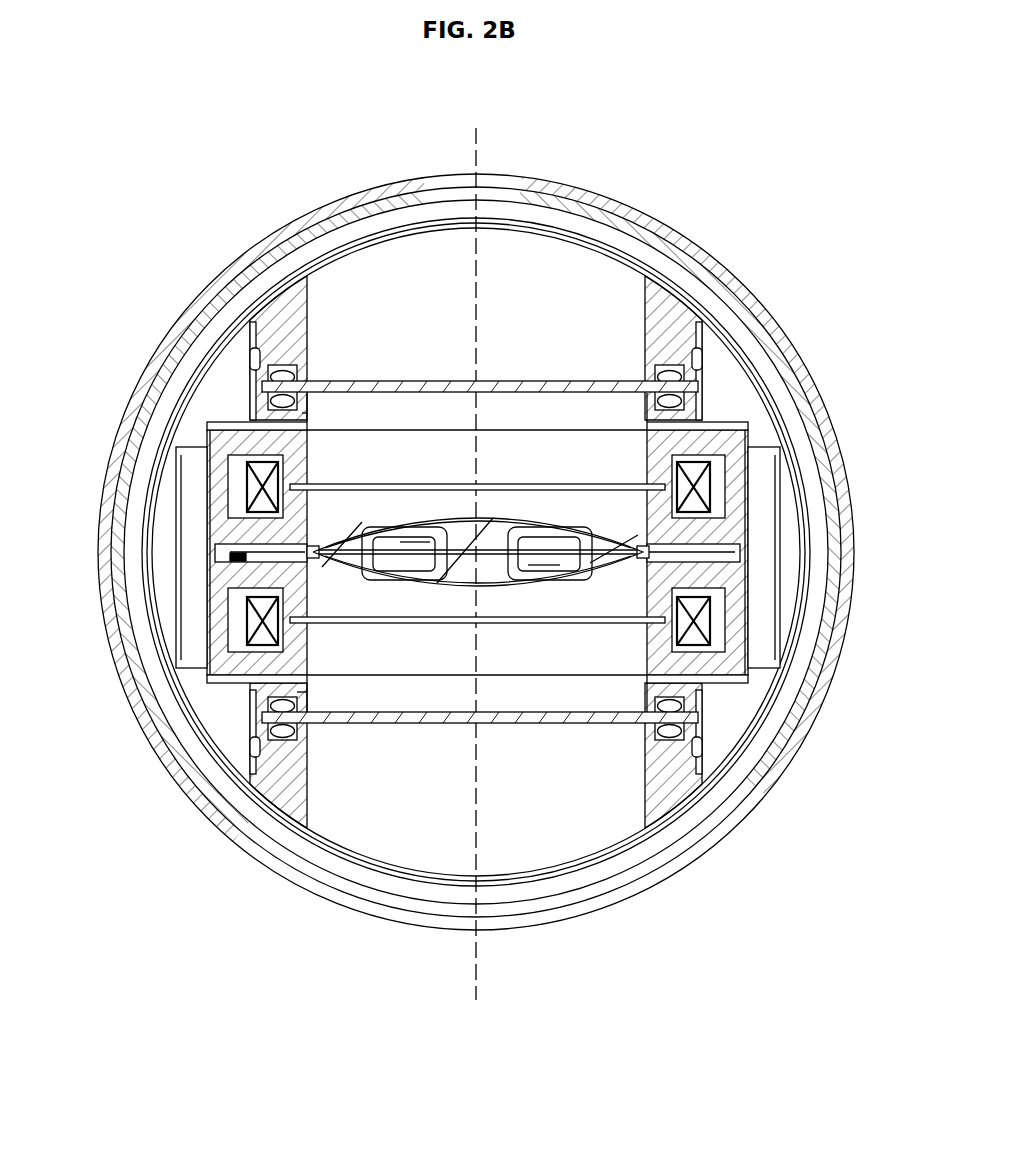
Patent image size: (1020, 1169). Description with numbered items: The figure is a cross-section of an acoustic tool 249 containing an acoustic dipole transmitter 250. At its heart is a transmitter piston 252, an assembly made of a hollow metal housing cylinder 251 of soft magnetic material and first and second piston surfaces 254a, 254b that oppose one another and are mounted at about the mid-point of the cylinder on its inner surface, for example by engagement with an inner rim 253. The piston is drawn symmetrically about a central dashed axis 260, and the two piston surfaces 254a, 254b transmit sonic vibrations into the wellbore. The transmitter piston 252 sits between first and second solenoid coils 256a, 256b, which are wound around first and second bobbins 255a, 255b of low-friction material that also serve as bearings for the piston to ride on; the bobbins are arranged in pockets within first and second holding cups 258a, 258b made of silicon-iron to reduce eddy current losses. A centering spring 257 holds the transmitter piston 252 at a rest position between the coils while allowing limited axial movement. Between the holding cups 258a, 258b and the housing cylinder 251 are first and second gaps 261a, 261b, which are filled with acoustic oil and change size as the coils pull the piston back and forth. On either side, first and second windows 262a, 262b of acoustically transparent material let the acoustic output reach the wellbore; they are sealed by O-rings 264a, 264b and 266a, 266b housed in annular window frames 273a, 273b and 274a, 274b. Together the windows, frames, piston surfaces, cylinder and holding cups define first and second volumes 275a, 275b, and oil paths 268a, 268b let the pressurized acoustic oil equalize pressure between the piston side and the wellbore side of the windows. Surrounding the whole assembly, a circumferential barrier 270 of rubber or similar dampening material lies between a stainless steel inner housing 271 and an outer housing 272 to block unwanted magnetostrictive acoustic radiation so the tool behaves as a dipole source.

The acoustic tool 249 is at (686, 122).
The acoustic dipole transmitter 250 is at (352, 412).
The housing cylinder 251 is at (757, 450).
The transmitter piston 252 is at (330, 510).
The inner rim 253 is at (318, 552).
The first piston surface 254a is at (515, 525).
The second piston surface 254b is at (515, 585).
The first bobbin 255a is at (247, 455).
The second bobbin 255b is at (232, 652).
The first solenoid coil 256a is at (246, 484).
The second solenoid coil 256b is at (252, 658).
The centering spring 257 is at (690, 545).
The first holding cup 258a is at (252, 374).
The second holding cup 258b is at (255, 775).
The rotation axis 260 is at (480, 162).
The first gap 261a is at (386, 484).
The second gap 261b is at (393, 623).
The first window 262a is at (560, 381).
The second window 262b is at (560, 723).
The O-ring 264a is at (668, 398).
The O-ring 264b is at (668, 740).
The O-ring 266a is at (688, 405).
The O-ring 266b is at (688, 735).
The oil path 268a is at (703, 395).
The oil path 268b is at (703, 720).
The barrier 270 is at (645, 237).
The inner housing 271 is at (590, 230).
The outer housing 272 is at (546, 186).
The annular window frame 273a is at (258, 330).
The annular window frame 273b is at (258, 780).
The annular window frame 274a is at (302, 413).
The annular window frame 274b is at (297, 692).
The first volume 275a is at (508, 454).
The second volume 275b is at (508, 647).